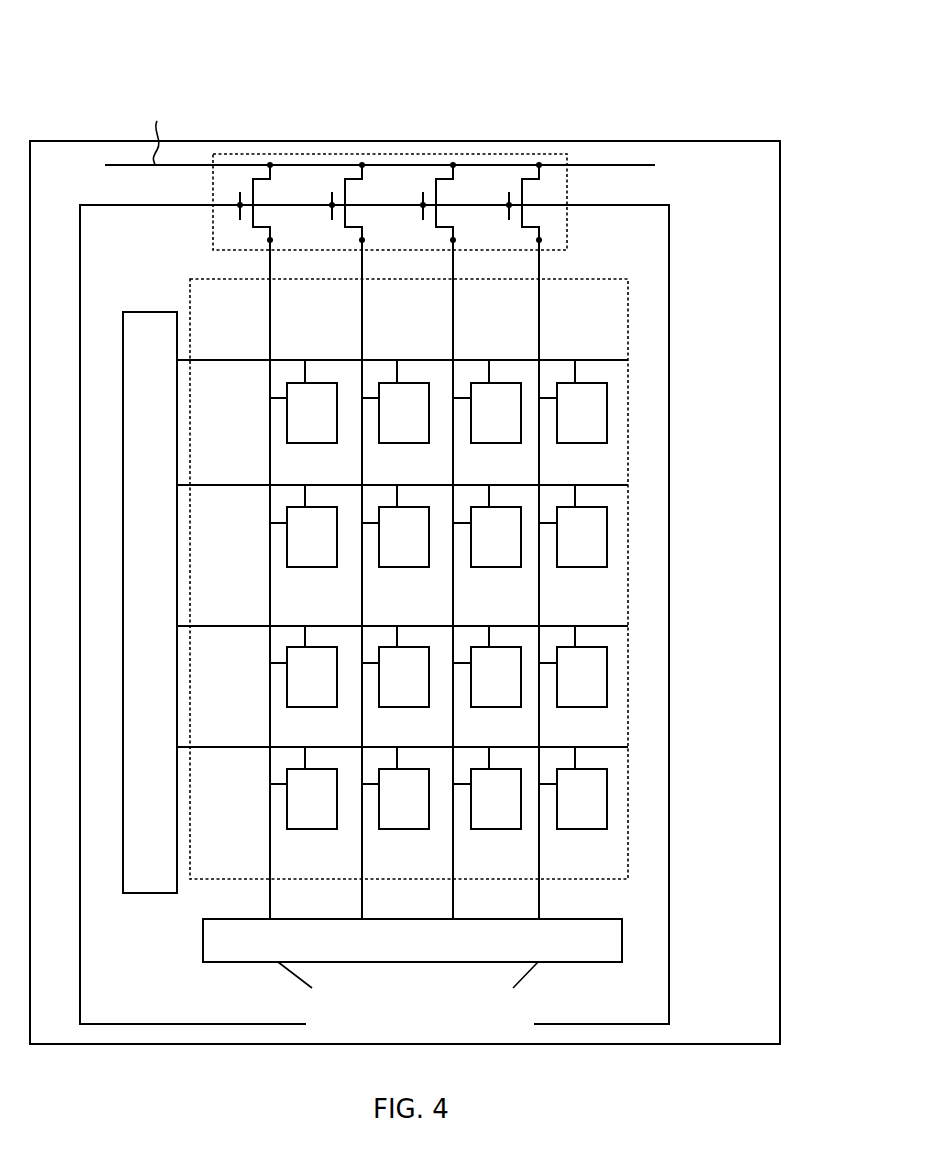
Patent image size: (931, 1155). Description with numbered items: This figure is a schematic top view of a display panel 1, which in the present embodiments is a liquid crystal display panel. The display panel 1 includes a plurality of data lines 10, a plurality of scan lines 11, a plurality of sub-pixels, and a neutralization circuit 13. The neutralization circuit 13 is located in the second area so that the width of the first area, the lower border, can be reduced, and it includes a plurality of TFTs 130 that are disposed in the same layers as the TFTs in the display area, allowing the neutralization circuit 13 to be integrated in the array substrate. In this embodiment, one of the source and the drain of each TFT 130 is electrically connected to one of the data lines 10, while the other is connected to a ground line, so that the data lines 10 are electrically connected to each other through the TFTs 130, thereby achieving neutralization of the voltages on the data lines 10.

The display panel 1 is at (409, 33).
The data line 10 is at (548, 485).
The scan line 11 is at (540, 328).
The neutralization circuit 13 is at (403, 152).
The TFT 130 is at (522, 178).